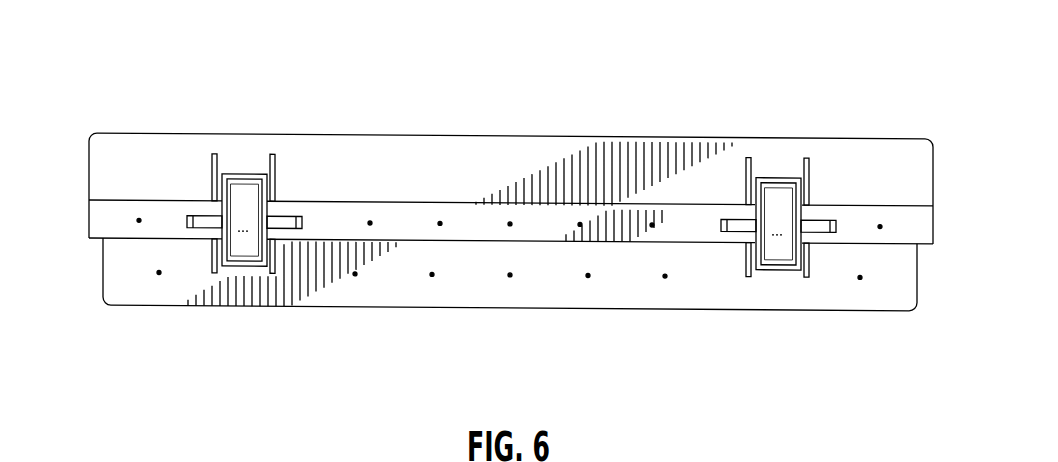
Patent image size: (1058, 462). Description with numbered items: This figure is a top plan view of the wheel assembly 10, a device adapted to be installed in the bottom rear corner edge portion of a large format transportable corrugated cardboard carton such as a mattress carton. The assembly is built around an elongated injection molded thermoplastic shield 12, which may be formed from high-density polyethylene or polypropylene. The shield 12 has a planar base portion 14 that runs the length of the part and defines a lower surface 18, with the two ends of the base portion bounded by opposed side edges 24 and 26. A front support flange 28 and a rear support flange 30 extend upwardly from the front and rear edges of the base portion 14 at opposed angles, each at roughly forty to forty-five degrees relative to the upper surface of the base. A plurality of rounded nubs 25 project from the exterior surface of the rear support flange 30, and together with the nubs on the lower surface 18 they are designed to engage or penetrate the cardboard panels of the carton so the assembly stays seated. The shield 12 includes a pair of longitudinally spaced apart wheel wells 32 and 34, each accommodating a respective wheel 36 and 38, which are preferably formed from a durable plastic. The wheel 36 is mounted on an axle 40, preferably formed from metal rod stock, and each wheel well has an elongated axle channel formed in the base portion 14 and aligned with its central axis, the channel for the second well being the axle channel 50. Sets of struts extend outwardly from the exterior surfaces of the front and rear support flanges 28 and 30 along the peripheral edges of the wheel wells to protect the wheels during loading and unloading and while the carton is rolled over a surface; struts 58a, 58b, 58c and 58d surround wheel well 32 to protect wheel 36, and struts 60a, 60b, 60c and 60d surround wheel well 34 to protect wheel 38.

The wheel assembly 10 is at (498, 73).
The shield 12 is at (511, 188).
The base portion 14 is at (510, 274).
The lower surface 18 is at (511, 203).
The side edge 24 is at (93, 185).
The rounded nubs 25 is at (509, 248).
The side edge 26 is at (929, 191).
The front support flange 28 is at (604, 174).
The rear support flange 30 is at (292, 274).
The wheel well 32 is at (244, 214).
The wheel well 34 is at (778, 217).
The wheel 36 is at (244, 220).
The wheel 38 is at (778, 224).
The axle 40 is at (284, 222).
The axle channel 50 is at (738, 225).
The strut 58a is at (214, 177).
The strut 58b is at (272, 177).
The strut 58c is at (272, 256).
The strut 58d is at (214, 256).
The strut 60a is at (748, 181).
The strut 60b is at (806, 181).
The strut 60c is at (806, 260).
The strut 60d is at (748, 260).